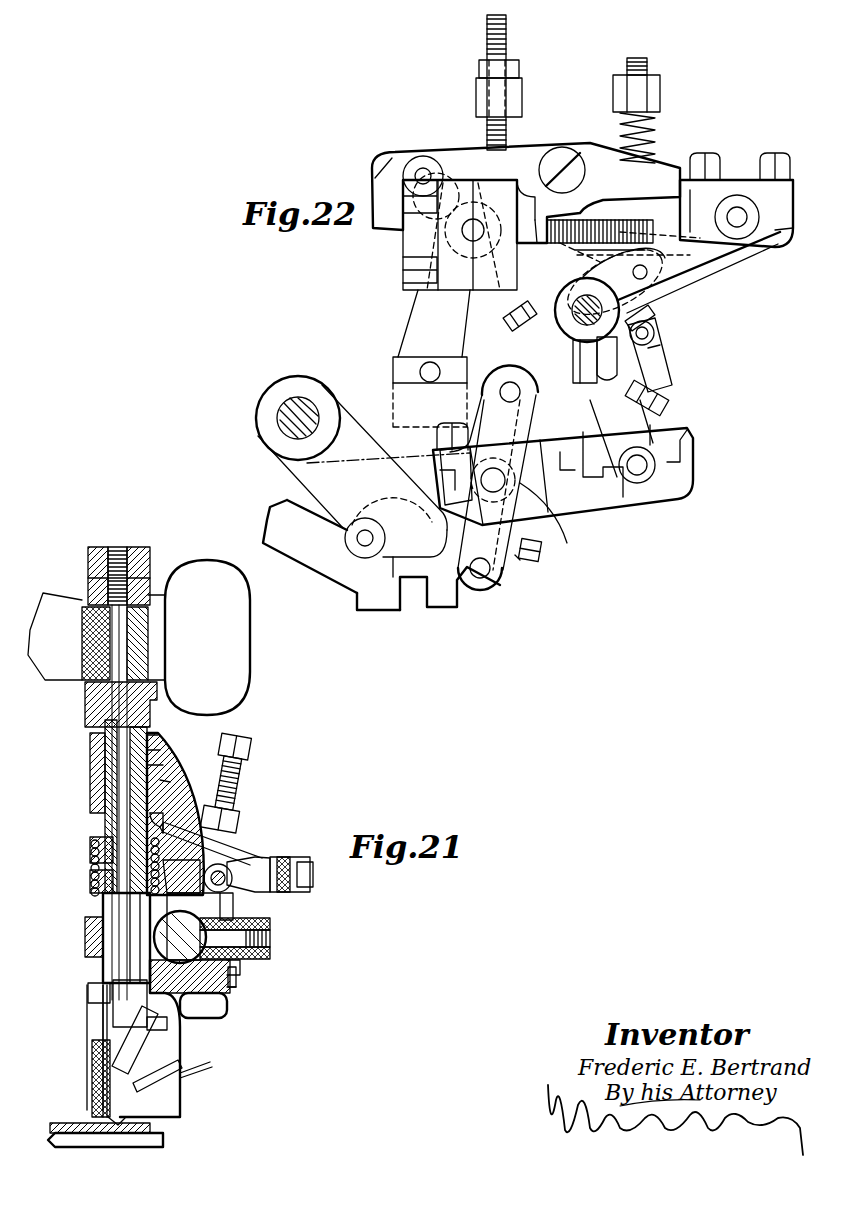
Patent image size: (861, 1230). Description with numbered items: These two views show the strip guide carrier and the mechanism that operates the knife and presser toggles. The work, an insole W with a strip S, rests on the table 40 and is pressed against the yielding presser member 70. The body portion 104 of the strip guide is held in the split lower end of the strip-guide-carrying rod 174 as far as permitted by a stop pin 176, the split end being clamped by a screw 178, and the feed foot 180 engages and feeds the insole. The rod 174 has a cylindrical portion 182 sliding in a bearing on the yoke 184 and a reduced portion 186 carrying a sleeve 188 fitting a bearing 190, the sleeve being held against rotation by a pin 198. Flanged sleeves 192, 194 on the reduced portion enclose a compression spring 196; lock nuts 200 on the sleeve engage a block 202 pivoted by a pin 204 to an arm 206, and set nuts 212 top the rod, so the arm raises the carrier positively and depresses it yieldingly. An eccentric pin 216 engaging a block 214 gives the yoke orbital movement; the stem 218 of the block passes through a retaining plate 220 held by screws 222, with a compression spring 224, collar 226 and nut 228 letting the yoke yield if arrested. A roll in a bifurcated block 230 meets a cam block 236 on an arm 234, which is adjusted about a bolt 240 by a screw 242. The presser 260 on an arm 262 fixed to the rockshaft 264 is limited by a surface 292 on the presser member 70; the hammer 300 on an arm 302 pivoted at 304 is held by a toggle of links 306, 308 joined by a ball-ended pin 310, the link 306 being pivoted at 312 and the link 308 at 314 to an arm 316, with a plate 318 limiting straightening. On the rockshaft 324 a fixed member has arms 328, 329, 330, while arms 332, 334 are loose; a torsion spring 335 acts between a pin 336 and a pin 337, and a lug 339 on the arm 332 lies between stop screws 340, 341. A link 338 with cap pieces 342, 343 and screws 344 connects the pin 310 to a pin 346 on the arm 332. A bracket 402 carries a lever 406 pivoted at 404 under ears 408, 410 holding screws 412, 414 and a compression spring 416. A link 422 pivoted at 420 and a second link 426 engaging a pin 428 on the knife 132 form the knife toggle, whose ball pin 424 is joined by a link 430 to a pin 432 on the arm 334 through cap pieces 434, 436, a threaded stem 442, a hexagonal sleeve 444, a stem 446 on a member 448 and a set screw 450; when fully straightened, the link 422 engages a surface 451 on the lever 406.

In FIG. 22, the screw 412 is at (506, 24).
In FIG. 22, the ear 408 is at (477, 82).
In FIG. 22, the screw 414 is at (647, 63).
In FIG. 22, the bracket 402 is at (540, 105).
In FIG. 22, the ear 410 is at (660, 92).
In FIG. 22, the compression spring 416 is at (655, 128).
In FIG. 22, the link 422 is at (445, 170).
In FIG. 22, the lever 406 is at (392, 162).
In FIG. 22, the pivot 420 is at (422, 160).
In FIG. 22, the pivot 404 is at (555, 148).
In FIG. 22, the link 430 is at (533, 212).
In FIG. 22, the set screw 450 is at (690, 180).
In FIG. 22, the cap piece 436 is at (755, 190).
In FIG. 22, the surface 451 is at (398, 225).
In FIG. 22, the hexagonal sleeve 444 is at (600, 215).
In FIG. 22, the stem 446 is at (662, 230).
In FIG. 22, the ball-ended pin 424 is at (462, 230).
In FIG. 22, the member 448 is at (773, 236).
In FIG. 22, the ball-ended pin 432 is at (737, 222).
In FIG. 22, the cap piece 434 is at (425, 265).
In FIG. 22, the threaded stem 442 is at (570, 245).
In FIG. 22, the rockshaft 324 is at (568, 300).
In FIG. 22, the arm 334 is at (690, 262).
In FIG. 22, the pin 337 is at (675, 283).
In FIG. 22, the torsion spring 335 is at (650, 300).
In FIG. 22, the arm 330 is at (655, 318).
In FIG. 22, the pin 336 is at (654, 335).
In FIG. 22, the lug 339 is at (660, 348).
In FIG. 22, the arm 329 is at (665, 365).
In FIG. 22, the link 426 is at (440, 312).
In FIG. 22, the knife 132 is at (398, 360).
In FIG. 21, the knife 132 is at (94, 1045).
In FIG. 22, the arm 328 is at (520, 330).
In FIG. 22, the pin 428 is at (440, 372).
In FIG. 22, the arm 316 is at (348, 385).
In FIG. 22, the rockshaft 264 is at (300, 418).
In FIG. 22, the stop screw 340 is at (575, 368).
In FIG. 22, the pivot 314 is at (510, 395).
In FIG. 22, the link 308 is at (592, 412).
In FIG. 22, the stop screw 341 is at (670, 402).
In FIG. 22, the screws 344 is at (448, 440).
In FIG. 22, the cap piece 342 is at (455, 468).
In FIG. 22, the arm 332 is at (680, 440).
In FIG. 22, the cap piece 343 is at (690, 460).
In FIG. 22, the arm 262 is at (305, 482).
In FIG. 22, the ball-ended pin 310 is at (520, 498).
In FIG. 22, the pin 346 is at (642, 480).
In FIG. 22, the link 338 is at (580, 515).
In FIG. 22, the hammer arm 302 is at (445, 538).
In FIG. 22, the pivot 304 is at (360, 545).
In FIG. 22, the surface 292 is at (392, 566).
In FIG. 22, the link 306 is at (530, 552).
In FIG. 22, the plate 318 is at (520, 555).
In FIG. 22, the pivot 312 is at (482, 570).
In FIG. 22, the hammer 300 is at (470, 600).
In FIG. 22, the yielding presser member 70 is at (380, 607).
In FIG. 22, the presser 260 is at (435, 607).
In FIG. 21, the set nuts 212 is at (150, 575).
In FIG. 21, the arm 206 is at (53, 608).
In FIG. 21, the pin 204 is at (92, 644).
In FIG. 21, the block 202 is at (150, 657).
In FIG. 21, the lock nuts 200 is at (153, 697).
In FIG. 21, the reduced portion 186 is at (158, 736).
In FIG. 21, the sleeve 188 is at (160, 751).
In FIG. 21, the bearing 190 is at (163, 766).
In FIG. 21, the pin 198 is at (170, 783).
In FIG. 21, the screw 242 is at (245, 782).
In FIG. 21, the yoke 184 is at (183, 810).
In FIG. 21, the arm 234 is at (247, 850).
In FIG. 21, the bifurcated block 230 is at (265, 860).
In FIG. 21, the cam block 236 is at (270, 880).
In FIG. 21, the bolt 240 is at (170, 830).
In FIG. 21, the flanged sleeve 192 is at (90, 840).
In FIG. 21, the compression spring 196 is at (90, 858).
In FIG. 21, the flanged sleeve 194 is at (103, 894).
In FIG. 21, the cylindrical portion 182 is at (103, 930).
In FIG. 21, the retaining plate 220 is at (233, 905).
In FIG. 21, the nut 228 is at (270, 923).
In FIG. 21, the stem 218 is at (270, 939).
In FIG. 21, the collar 226 is at (270, 954).
In FIG. 21, the compression spring 224 is at (240, 968).
In FIG. 21, the screws 222 is at (238, 980).
In FIG. 21, the pin 216 is at (188, 963).
In FIG. 21, the block 214 is at (233, 987).
In FIG. 21, the stop pin 176 is at (113, 1022).
In FIG. 21, the screw 178 is at (167, 1024).
In FIG. 21, the strip-guide-carrying rod 174 is at (150, 1040).
In FIG. 21, the strip S is at (213, 1063).
In FIG. 21, the body portion 104 is at (180, 1078).
In FIG. 21, the insole W is at (150, 1128).
In FIG. 21, the table 40 is at (163, 1140).
In FIG. 21, the feed foot 180 is at (118, 1133).